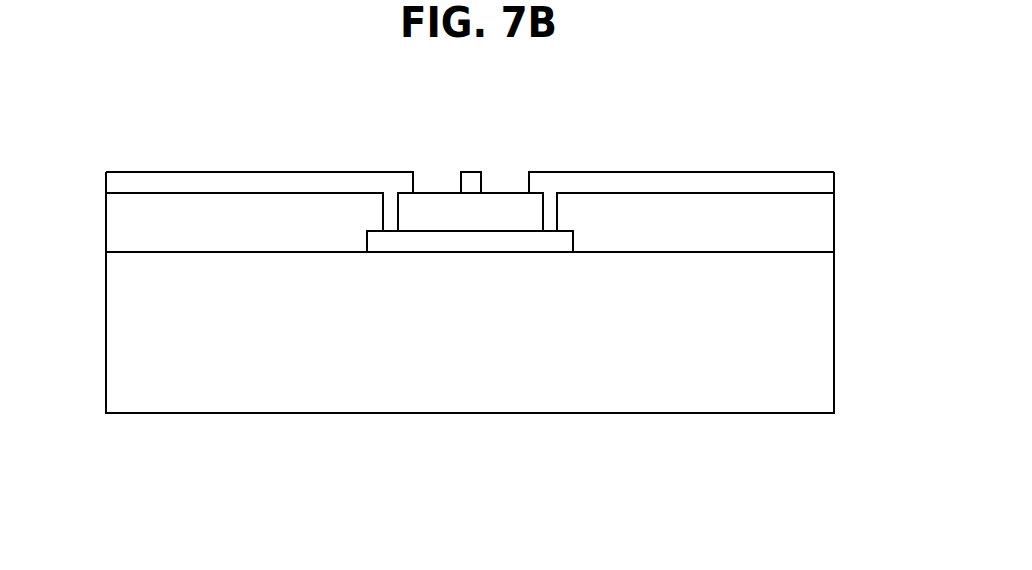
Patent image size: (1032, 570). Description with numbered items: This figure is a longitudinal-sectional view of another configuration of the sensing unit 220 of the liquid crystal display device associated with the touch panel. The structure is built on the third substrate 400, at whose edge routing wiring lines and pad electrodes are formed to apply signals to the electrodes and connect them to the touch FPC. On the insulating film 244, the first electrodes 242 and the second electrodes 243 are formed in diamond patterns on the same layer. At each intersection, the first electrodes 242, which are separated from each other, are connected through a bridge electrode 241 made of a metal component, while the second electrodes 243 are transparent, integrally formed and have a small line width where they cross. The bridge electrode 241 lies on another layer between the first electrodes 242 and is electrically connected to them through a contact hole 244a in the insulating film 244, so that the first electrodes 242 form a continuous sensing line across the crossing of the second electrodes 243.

The thin film transistor layer / display unit stack 220 is at (95, 173).
The bridge electrode 241 is at (470, 247).
The first electrode 242 is at (248, 171).
The second electrode 243 is at (473, 177).
The insulating film 244 is at (829, 231).
The contact hole 244a is at (549, 210).
The third substrate 400 is at (829, 338).